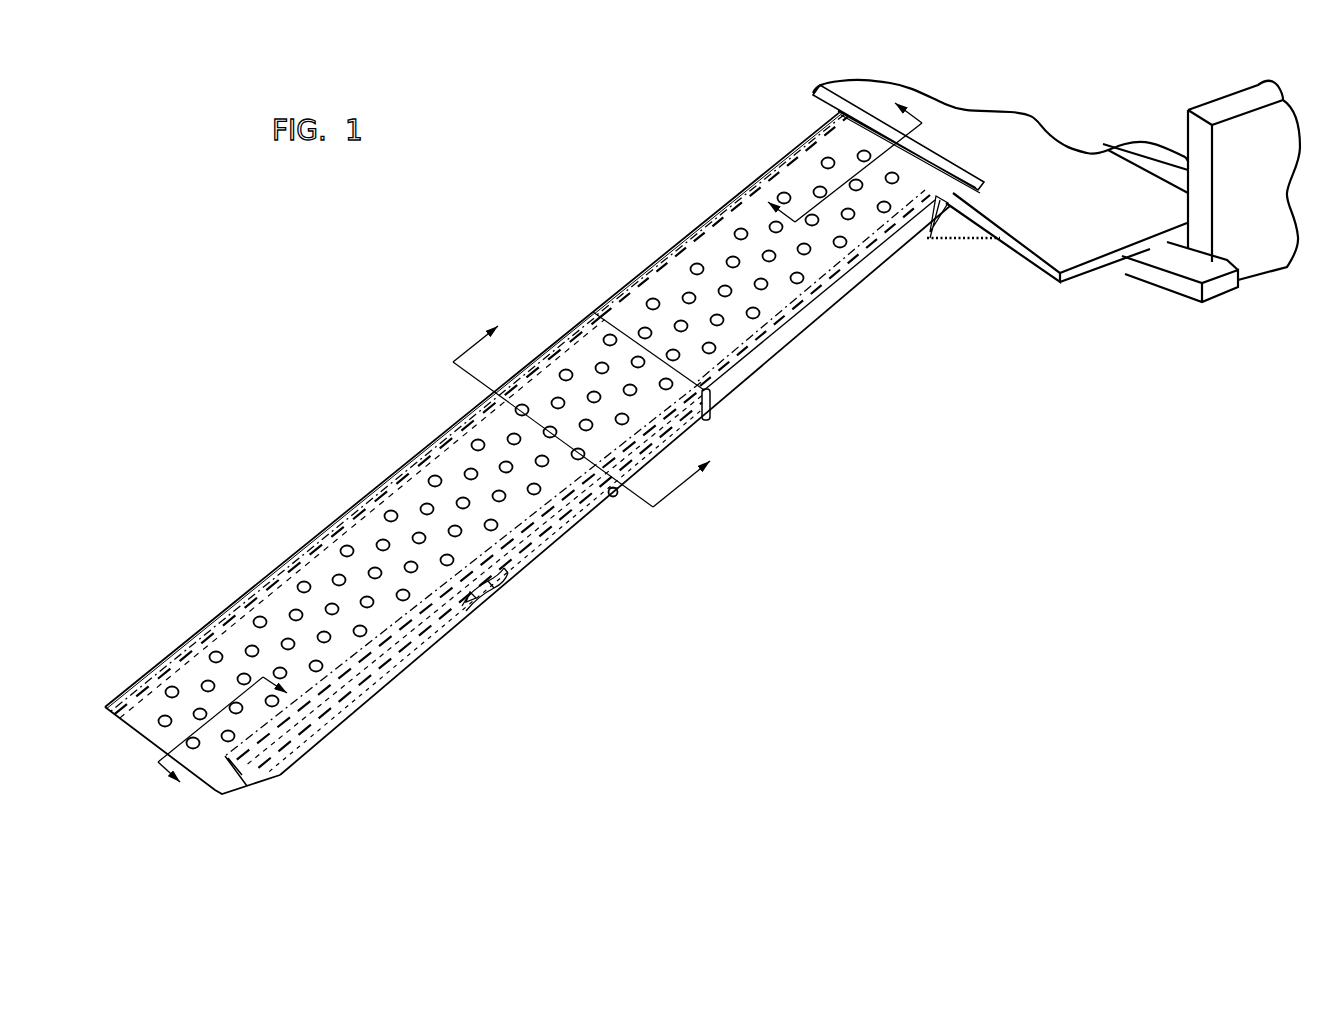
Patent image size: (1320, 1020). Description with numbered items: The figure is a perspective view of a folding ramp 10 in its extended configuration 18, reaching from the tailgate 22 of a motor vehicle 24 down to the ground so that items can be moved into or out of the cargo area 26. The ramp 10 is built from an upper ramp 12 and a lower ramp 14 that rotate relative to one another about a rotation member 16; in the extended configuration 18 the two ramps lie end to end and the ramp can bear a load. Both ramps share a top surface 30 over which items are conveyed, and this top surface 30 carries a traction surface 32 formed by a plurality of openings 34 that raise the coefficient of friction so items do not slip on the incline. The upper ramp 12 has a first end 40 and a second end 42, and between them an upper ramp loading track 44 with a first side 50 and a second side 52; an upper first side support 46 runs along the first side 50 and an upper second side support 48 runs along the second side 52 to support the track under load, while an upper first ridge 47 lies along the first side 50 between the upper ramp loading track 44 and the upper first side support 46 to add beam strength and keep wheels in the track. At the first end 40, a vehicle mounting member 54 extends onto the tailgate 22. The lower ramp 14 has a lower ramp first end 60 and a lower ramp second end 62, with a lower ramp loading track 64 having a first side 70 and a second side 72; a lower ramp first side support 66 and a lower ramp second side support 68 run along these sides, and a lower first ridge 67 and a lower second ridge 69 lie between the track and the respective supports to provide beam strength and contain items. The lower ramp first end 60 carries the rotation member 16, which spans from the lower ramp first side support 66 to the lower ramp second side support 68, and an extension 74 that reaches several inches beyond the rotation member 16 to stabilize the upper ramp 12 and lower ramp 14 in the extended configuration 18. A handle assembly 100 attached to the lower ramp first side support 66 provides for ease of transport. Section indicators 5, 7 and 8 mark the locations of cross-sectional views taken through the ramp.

The folding ramp 10 is at (478, 283).
The upper ramp 12 is at (678, 207).
The lower ramp 14 is at (411, 727).
The rotation member 16 is at (615, 497).
The extended configuration 18 is at (870, 363).
The tailgate 22 is at (1077, 220).
The motor vehicle 24 is at (1237, 175).
The cargo area 26 is at (1168, 163).
The top surface 30 is at (740, 337).
The traction surface 32 is at (802, 168).
The openings 34 is at (647, 301).
The first end 40 is at (942, 224).
The second end 42 is at (730, 435).
The upper ramp loading track 44 is at (782, 305).
The upper first side support 46 is at (877, 272).
The upper first ridge 47 is at (885, 245).
The upper second side support 48 is at (645, 267).
The first side 50 is at (830, 277).
The second side 52 is at (740, 198).
The vehicle mounting member 54 is at (957, 175).
The lower ramp first end 60 is at (526, 305).
The lower ramp second end 62 is at (227, 760).
The lower ramp loading track 64 is at (292, 703).
The lower ramp first side support 66 is at (547, 535).
The lower first ridge 67 is at (405, 633).
The lower ramp second side support 68 is at (447, 428).
The lower second ridge 69 is at (300, 545).
The first side 70 is at (490, 572).
The second side 72 is at (212, 630).
The extension 74 is at (650, 410).
The handle assembly 100 is at (495, 598).
The section line 5 is at (836, 153).
The section line 7 is at (581, 415).
The section line 8 is at (232, 743).